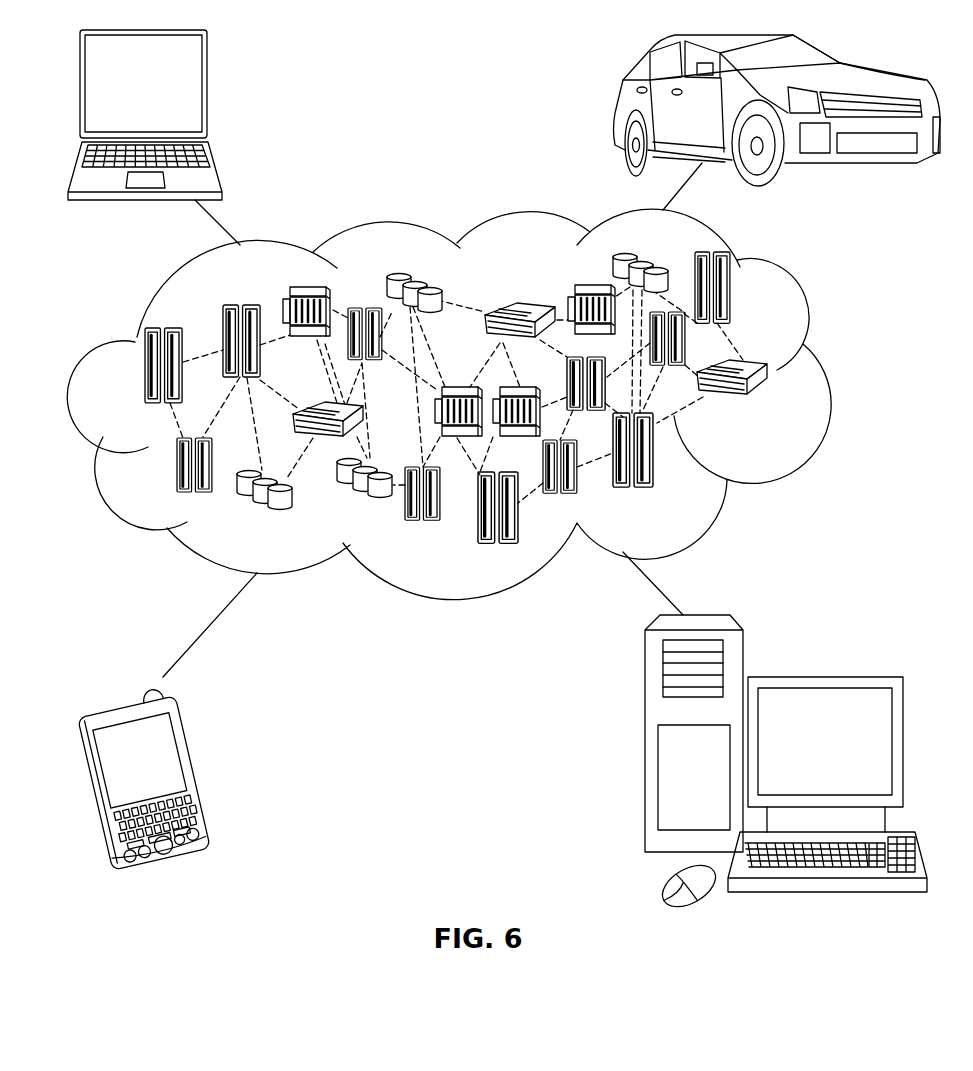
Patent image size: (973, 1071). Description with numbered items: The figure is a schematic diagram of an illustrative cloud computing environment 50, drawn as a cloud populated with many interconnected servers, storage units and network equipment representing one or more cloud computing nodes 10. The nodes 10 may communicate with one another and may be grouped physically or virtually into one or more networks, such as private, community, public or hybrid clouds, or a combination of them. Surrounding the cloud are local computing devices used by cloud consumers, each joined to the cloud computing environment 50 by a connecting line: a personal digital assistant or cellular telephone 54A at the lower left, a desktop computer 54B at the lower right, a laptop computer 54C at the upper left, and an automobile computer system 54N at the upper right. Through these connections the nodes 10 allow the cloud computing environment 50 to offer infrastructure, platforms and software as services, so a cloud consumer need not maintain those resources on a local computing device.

The cloud computing environment 50 is at (823, 372).
The cloud computing node 10 is at (780, 415).
The personal digital assistant or cellular telephone 54A is at (200, 772).
The desktop computer 54B is at (822, 676).
The laptop computer 54C is at (207, 91).
The automobile computer system 54N is at (620, 108).